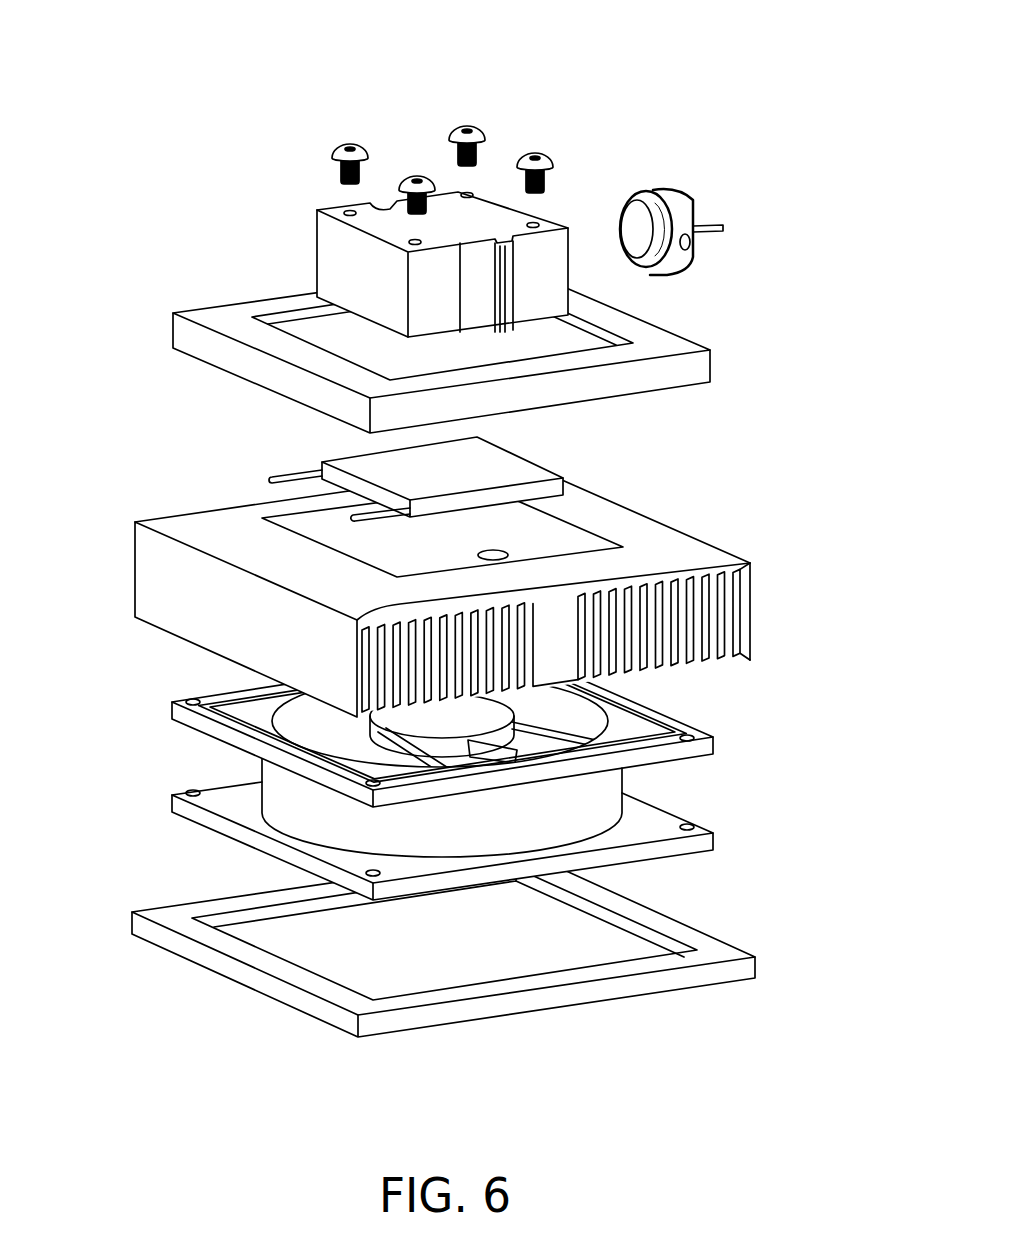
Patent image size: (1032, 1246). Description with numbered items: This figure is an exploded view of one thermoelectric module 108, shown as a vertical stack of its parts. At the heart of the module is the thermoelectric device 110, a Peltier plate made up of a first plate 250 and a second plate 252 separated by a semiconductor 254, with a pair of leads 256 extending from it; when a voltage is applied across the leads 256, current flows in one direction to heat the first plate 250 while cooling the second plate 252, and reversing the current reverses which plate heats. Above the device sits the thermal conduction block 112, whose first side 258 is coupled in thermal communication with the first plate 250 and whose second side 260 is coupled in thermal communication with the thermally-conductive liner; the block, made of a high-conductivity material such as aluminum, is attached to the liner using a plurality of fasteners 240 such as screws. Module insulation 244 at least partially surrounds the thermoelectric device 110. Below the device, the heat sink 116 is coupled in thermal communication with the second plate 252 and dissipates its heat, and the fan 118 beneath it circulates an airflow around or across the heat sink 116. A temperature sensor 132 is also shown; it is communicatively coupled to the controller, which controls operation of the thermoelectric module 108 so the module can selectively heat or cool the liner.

The thermoelectric module 108 is at (812, 646).
The thermoelectric device 110 is at (567, 483).
The thermal conduction block 112 is at (332, 257).
The heat sink 116 is at (713, 612).
The fan 118 is at (597, 803).
The temperature sensor 132 is at (672, 190).
The fasteners 240 is at (462, 128).
The module insulation 244 is at (173, 328).
The first plate 250 is at (380, 463).
The second plate 252 is at (452, 538).
The semiconductor 254 is at (528, 492).
The leads 256 is at (360, 510).
The first side 258 is at (534, 335).
The second side 260 is at (467, 220).